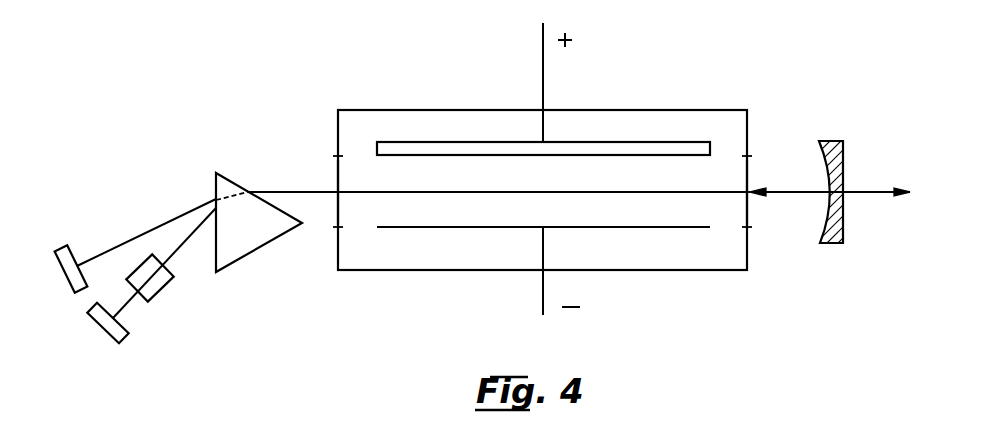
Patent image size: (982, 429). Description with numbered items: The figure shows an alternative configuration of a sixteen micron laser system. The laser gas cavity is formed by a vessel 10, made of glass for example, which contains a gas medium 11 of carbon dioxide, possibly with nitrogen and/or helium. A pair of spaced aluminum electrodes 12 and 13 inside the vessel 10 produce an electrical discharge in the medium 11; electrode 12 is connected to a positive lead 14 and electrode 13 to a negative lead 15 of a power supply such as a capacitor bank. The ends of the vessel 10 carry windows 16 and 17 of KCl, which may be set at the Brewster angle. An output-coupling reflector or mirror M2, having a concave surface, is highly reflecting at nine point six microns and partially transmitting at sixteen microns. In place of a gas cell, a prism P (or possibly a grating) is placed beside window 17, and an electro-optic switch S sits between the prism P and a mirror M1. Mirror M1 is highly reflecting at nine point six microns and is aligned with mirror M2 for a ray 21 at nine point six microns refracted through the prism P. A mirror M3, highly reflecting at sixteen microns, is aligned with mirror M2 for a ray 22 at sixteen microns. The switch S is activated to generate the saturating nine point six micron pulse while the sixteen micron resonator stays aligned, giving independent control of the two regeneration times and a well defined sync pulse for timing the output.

The vessel 10 is at (408, 270).
The gas laser medium 11 is at (669, 222).
The electrode 12 is at (632, 143).
The electrode 13 is at (650, 227).
The positive lead 14 is at (543, 100).
The negative lead 15 is at (543, 292).
The window 16 is at (748, 213).
The window 17 is at (335, 204).
The ray at 9.6 microns 21 is at (173, 253).
The ray at 16 microns 22 is at (142, 235).
The prism P is at (238, 187).
The electro-optic switch S is at (142, 297).
The mirror M1 is at (105, 332).
The output-coupling mirror M2 is at (825, 243).
The mirror M3 is at (55, 253).